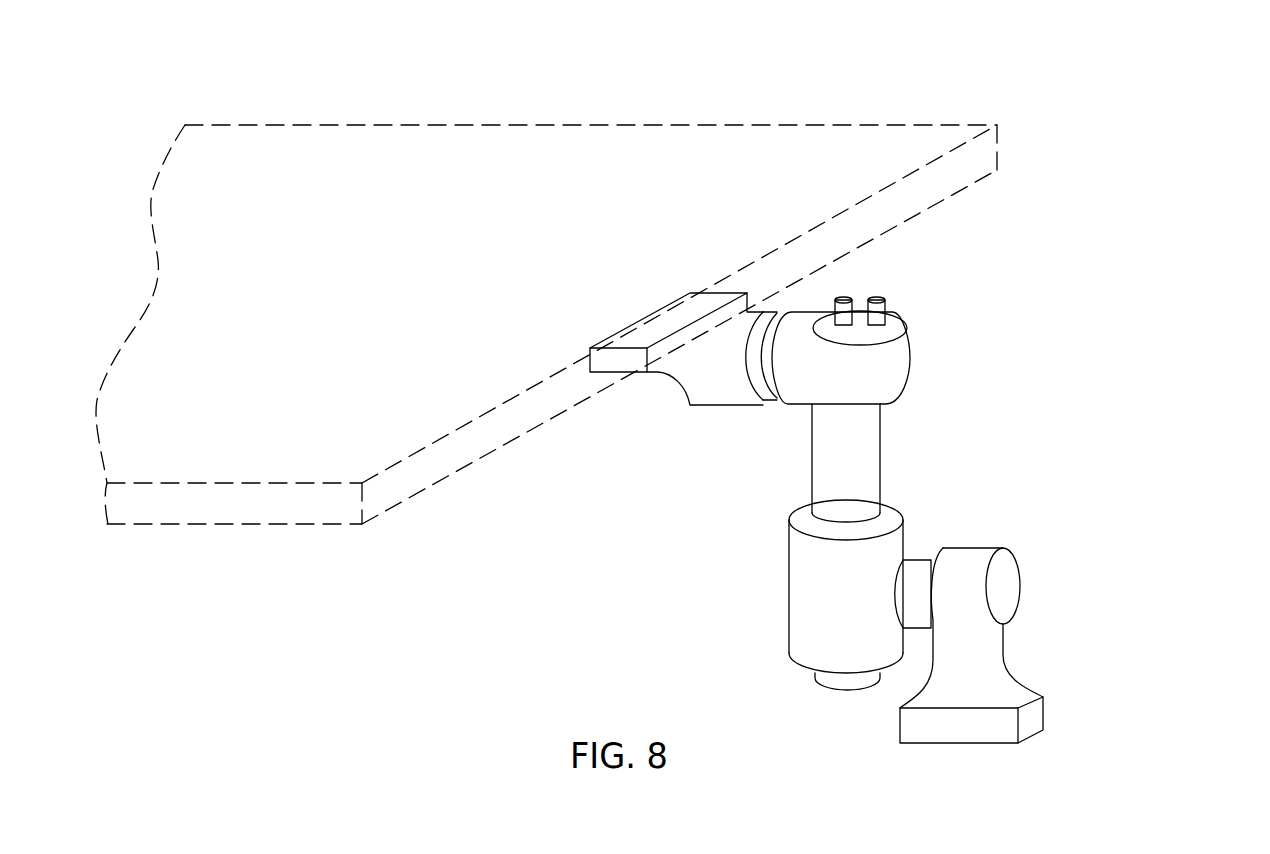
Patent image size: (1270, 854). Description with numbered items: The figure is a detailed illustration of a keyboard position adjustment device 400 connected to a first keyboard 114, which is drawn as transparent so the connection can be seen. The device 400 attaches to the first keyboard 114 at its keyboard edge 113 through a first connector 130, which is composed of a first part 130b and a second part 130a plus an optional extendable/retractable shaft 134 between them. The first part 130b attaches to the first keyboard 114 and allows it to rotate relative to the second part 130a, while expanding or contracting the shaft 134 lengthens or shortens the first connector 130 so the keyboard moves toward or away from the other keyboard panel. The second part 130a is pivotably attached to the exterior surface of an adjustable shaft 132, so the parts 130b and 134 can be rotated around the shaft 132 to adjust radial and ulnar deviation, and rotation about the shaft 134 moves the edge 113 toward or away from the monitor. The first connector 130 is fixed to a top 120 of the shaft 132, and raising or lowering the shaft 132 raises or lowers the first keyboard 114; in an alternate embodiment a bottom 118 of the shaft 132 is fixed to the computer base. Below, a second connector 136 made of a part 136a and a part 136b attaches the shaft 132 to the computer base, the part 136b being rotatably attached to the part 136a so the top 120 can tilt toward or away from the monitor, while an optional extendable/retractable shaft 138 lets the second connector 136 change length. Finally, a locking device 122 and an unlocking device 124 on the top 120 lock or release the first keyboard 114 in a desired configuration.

The keyboard edge 113 is at (972, 154).
The first keyboard 114 is at (632, 143).
The bottom of shaft 118 is at (813, 680).
The top of shaft 120 is at (893, 327).
The locking device 122 is at (845, 297).
The unlocking device 124 is at (878, 297).
The first connector 130 is at (743, 412).
The second part of first connector 130a is at (901, 314).
The first part of first connector 130b is at (710, 387).
The shaft 132 is at (868, 466).
The extendable/retractable shaft 134 is at (770, 330).
The second connector 136 is at (1017, 525).
The first part of second connector 136a is at (970, 645).
The second part of second connector 136b is at (812, 583).
The extendable/retractable shaft 138 is at (915, 573).
The keyboard position adjustment device 400 is at (1110, 392).